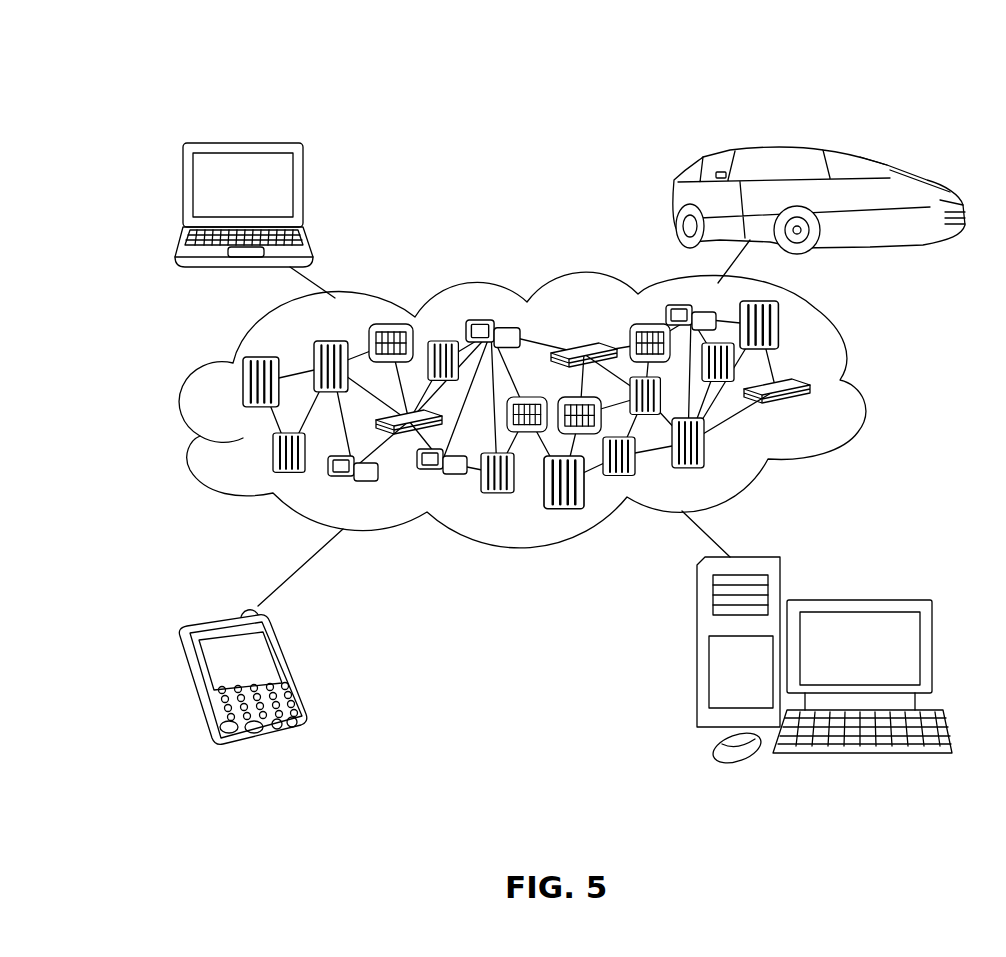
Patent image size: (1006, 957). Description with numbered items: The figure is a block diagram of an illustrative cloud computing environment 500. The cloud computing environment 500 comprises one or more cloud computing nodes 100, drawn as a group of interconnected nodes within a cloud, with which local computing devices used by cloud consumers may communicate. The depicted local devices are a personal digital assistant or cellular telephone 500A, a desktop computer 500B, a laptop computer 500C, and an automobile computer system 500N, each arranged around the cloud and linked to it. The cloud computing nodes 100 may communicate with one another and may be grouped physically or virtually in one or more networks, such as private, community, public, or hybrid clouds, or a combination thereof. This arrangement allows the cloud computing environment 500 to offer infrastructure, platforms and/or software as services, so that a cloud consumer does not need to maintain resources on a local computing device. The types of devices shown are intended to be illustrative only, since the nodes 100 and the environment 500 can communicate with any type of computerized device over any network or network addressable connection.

The cloud computing environment 500 is at (120, 62).
The cloud computing nodes 100 is at (815, 413).
The personal digital assistant (PDA) or cellular telephone 500A is at (295, 669).
The desktop computer 500B is at (856, 599).
The laptop computer 500C is at (303, 193).
The automobile computer system 500N is at (672, 203).